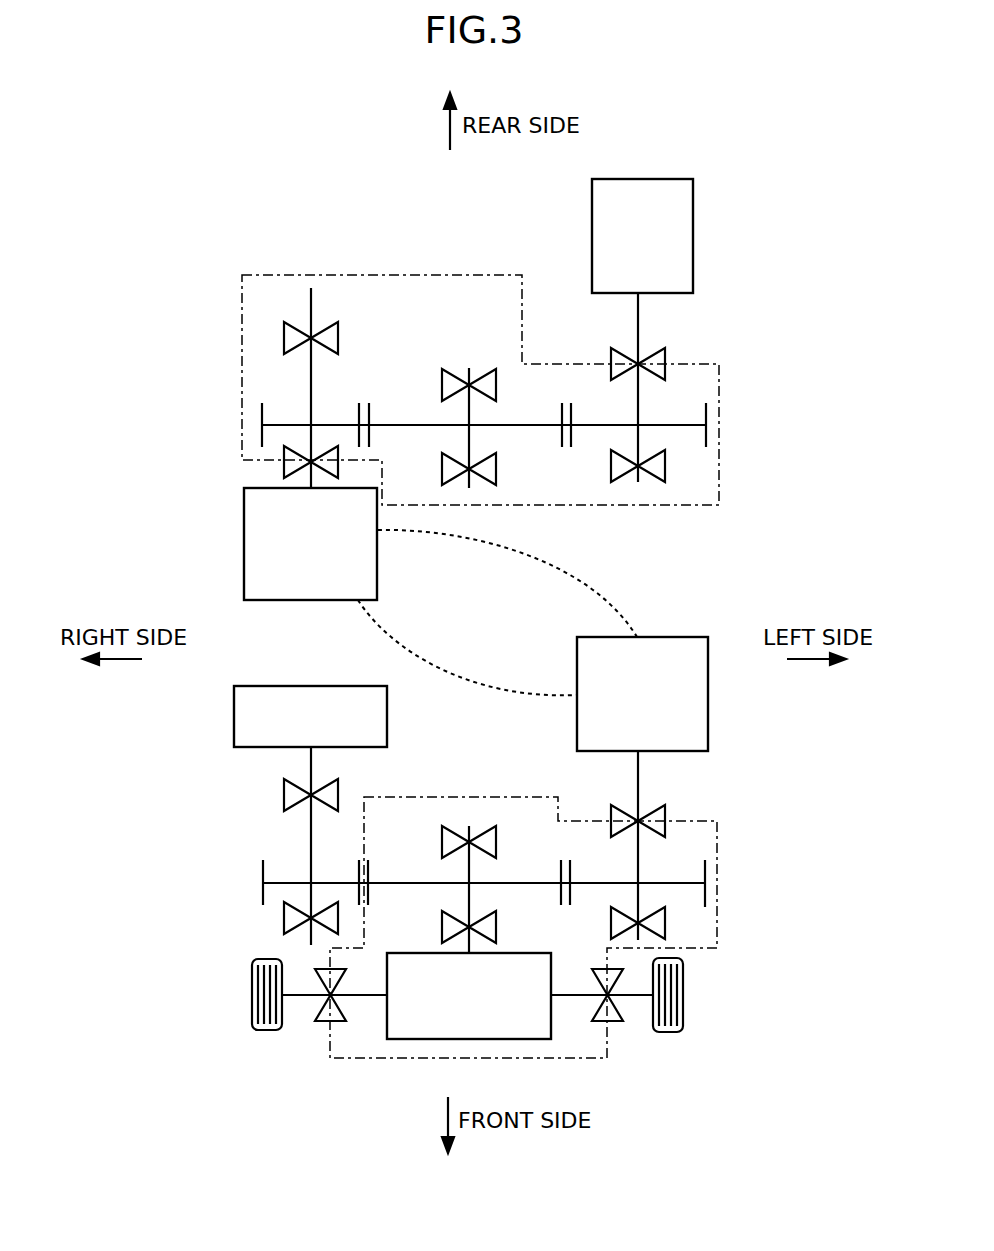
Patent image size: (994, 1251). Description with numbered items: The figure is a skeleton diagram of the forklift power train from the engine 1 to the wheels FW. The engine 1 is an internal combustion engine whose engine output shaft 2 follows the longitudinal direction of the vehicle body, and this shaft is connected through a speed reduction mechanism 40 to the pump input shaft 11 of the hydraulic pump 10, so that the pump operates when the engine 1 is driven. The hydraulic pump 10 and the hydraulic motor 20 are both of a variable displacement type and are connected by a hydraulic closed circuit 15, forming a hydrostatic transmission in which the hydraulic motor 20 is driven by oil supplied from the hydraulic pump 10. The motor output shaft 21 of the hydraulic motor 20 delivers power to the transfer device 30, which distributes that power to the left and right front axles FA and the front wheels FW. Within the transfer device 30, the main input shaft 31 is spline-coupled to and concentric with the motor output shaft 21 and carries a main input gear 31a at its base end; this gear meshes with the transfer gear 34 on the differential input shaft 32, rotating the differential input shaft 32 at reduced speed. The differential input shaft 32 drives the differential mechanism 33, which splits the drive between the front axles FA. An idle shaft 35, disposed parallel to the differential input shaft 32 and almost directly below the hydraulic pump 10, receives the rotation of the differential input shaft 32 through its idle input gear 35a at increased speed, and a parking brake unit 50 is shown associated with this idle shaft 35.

The engine 1 is at (640, 179).
The engine output shaft 2 is at (638, 317).
The hydraulic pump 10 is at (244, 545).
The pump input shaft 11 is at (311, 482).
The hydraulic closed circuit 15 is at (545, 565).
The hydraulic motor 20 is at (662, 637).
The motor output shaft 21 is at (638, 778).
The transfer device 30 is at (466, 797).
The main input shaft 31 is at (638, 855).
The main input gear 31a is at (688, 883).
The differential input shaft 32 is at (470, 870).
The differential mechanism 33 is at (551, 1022).
The transfer gear 34 is at (525, 883).
The idle shaft 35 is at (311, 822).
The idle input gear 35a is at (280, 882).
The speed reduction mechanism 40 is at (262, 275).
The parking brake unit 50 is at (310, 686).
The front axles FA is at (303, 996).
The front wheel FW is at (252, 993).